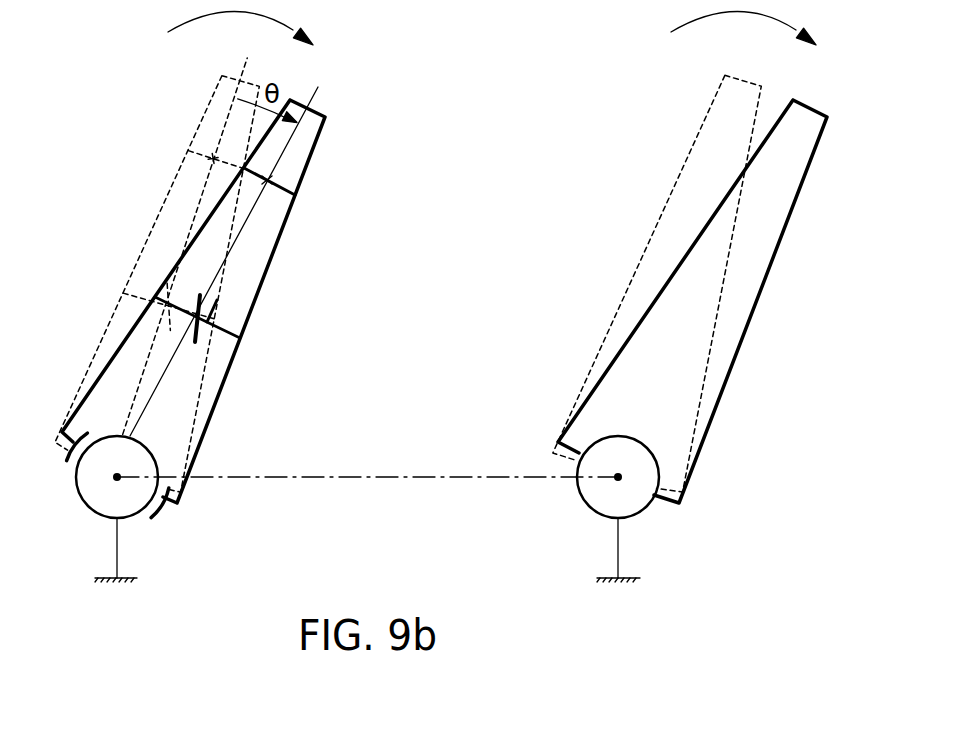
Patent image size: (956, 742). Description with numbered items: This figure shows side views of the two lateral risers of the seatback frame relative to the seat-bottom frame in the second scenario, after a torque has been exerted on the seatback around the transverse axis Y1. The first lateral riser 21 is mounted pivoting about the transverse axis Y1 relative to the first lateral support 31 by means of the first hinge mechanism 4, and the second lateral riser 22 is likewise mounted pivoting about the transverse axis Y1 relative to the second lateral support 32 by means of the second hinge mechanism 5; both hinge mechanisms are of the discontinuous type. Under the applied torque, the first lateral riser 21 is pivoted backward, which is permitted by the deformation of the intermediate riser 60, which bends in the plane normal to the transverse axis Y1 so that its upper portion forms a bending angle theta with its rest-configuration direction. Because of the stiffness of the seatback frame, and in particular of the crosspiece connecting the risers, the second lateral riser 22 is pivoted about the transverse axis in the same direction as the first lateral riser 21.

The first lateral riser 21 is at (288, 214).
The second lateral riser 22 is at (748, 318).
The first hinge mechanism 4 is at (137, 513).
The second hinge mechanism 5 is at (597, 513).
The first lateral support 31 is at (113, 545).
The second lateral support 32 is at (620, 538).
The intermediate riser 60 is at (172, 357).
The transverse axis Y1 is at (330, 480).